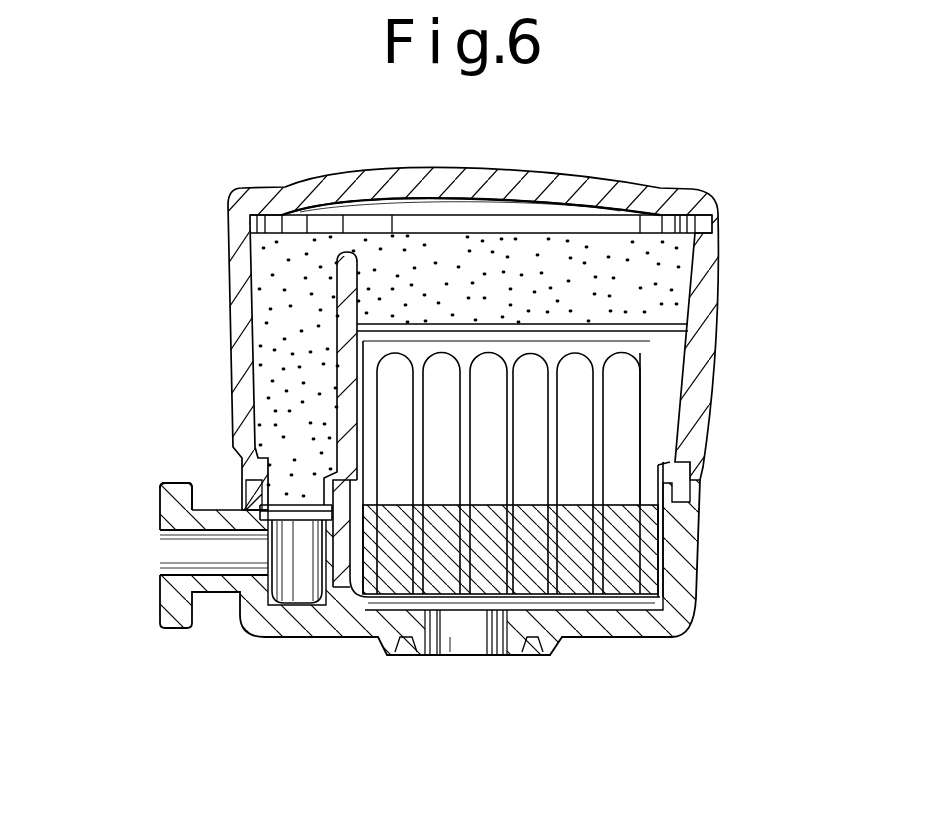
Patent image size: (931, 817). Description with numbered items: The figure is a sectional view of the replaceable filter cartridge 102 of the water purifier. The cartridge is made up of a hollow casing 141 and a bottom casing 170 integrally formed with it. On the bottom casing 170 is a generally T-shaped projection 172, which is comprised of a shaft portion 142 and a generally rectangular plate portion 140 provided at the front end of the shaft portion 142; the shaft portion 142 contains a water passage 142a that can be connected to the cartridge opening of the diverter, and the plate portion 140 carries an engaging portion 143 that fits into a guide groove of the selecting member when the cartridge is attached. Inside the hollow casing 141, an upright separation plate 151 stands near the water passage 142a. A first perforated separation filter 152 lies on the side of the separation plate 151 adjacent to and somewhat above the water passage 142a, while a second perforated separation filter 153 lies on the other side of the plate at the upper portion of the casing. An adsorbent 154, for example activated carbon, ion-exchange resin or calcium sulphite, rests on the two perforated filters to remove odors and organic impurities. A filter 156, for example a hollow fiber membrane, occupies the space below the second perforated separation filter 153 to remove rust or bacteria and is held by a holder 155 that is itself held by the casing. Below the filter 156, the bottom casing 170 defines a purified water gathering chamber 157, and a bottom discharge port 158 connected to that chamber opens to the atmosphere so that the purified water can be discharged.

The filter cartridge 102 is at (790, 128).
The hollow casing 141 is at (226, 327).
The adsorbent 154 is at (262, 286).
The separation plate 151 is at (345, 432).
The second perforated separation filter 153 is at (690, 332).
The filter 156 is at (640, 405).
The holder 155 is at (648, 522).
The first perforated separation filter 152 is at (307, 522).
The bottom casing 170 is at (680, 617).
The plate portion 140 is at (168, 517).
The engaging portion 143 is at (163, 486).
The shaft portion 142 is at (203, 584).
The water passage 142a is at (220, 562).
The projection 172 is at (152, 578).
The purified water gathering chamber 157 is at (478, 630).
The discharge port 158 is at (456, 652).